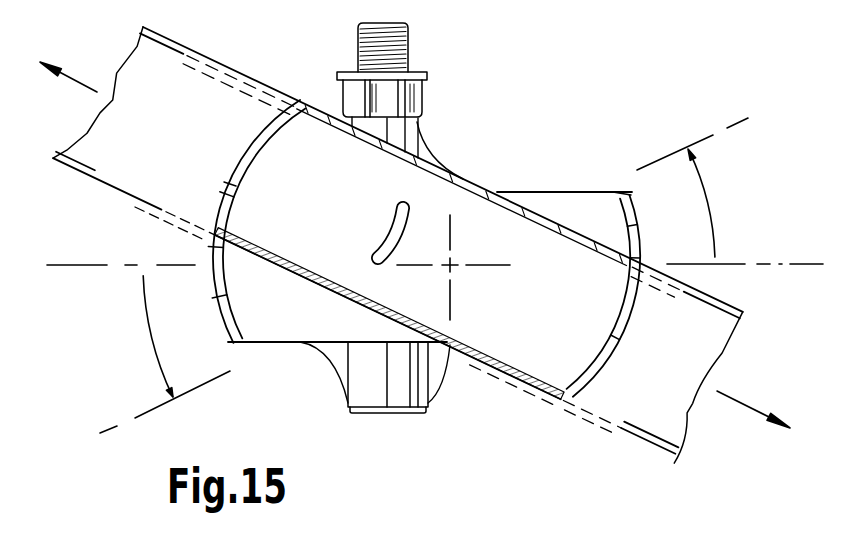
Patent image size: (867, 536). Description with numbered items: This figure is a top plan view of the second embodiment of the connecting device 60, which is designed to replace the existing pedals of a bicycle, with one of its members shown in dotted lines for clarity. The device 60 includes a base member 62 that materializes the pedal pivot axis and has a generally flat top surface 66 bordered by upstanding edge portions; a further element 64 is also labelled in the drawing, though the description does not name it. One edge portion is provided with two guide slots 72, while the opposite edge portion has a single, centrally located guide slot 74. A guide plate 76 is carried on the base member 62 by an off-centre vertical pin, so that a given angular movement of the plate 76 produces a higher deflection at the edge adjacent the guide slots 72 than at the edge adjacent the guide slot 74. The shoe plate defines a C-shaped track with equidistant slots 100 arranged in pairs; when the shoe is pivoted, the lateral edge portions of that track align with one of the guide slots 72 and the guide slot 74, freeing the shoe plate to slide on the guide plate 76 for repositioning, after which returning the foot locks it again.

The connecting device 60 is at (569, 82).
The base member 62 is at (583, 192).
The fitting 64 is at (422, 97).
The top surface 66 is at (302, 324).
The guide slots 72 is at (232, 237).
The guide slot 74 is at (637, 257).
The guide plate 76 is at (537, 332).
The slots 100 is at (228, 65).